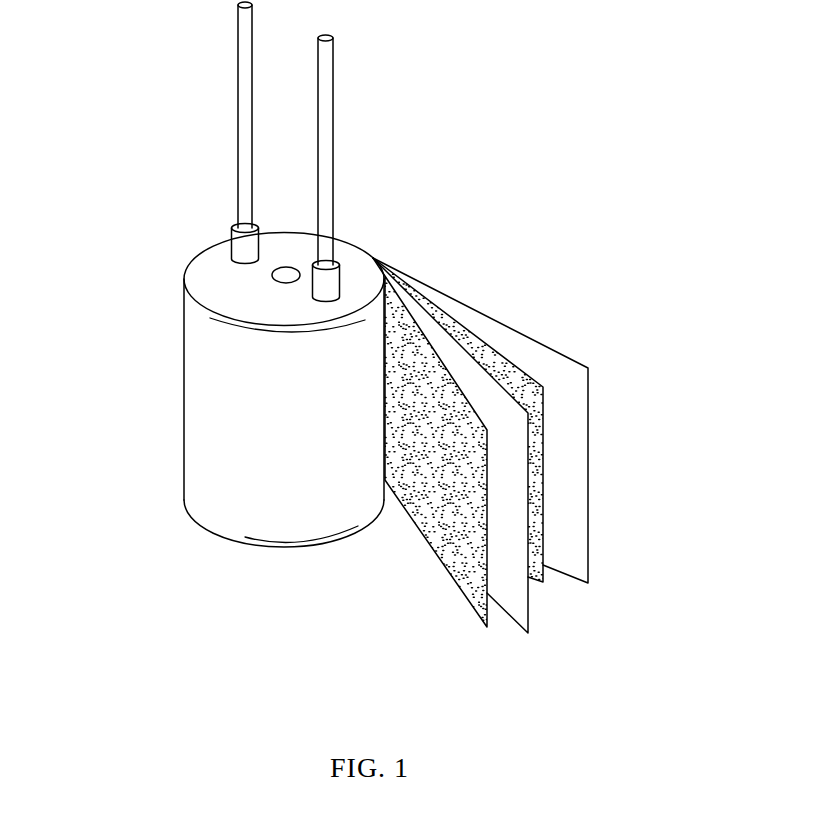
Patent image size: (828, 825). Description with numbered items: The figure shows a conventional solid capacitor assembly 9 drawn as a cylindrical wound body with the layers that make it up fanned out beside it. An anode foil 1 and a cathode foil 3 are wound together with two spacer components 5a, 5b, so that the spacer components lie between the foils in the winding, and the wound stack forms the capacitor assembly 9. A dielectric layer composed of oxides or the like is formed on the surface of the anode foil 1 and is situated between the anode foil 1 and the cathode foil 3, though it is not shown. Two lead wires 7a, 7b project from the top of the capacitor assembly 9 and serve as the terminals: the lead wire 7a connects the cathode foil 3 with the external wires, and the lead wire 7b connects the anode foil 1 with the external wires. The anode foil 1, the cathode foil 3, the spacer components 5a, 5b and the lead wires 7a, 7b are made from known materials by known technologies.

The anode foil 1 is at (446, 565).
The cathode foil 3 is at (543, 573).
The spacer component 5a is at (528, 613).
The spacer component 5b is at (588, 520).
The lead wire 7a is at (327, 110).
The lead wire 7b is at (238, 106).
The capacitor assembly 9 is at (197, 368).